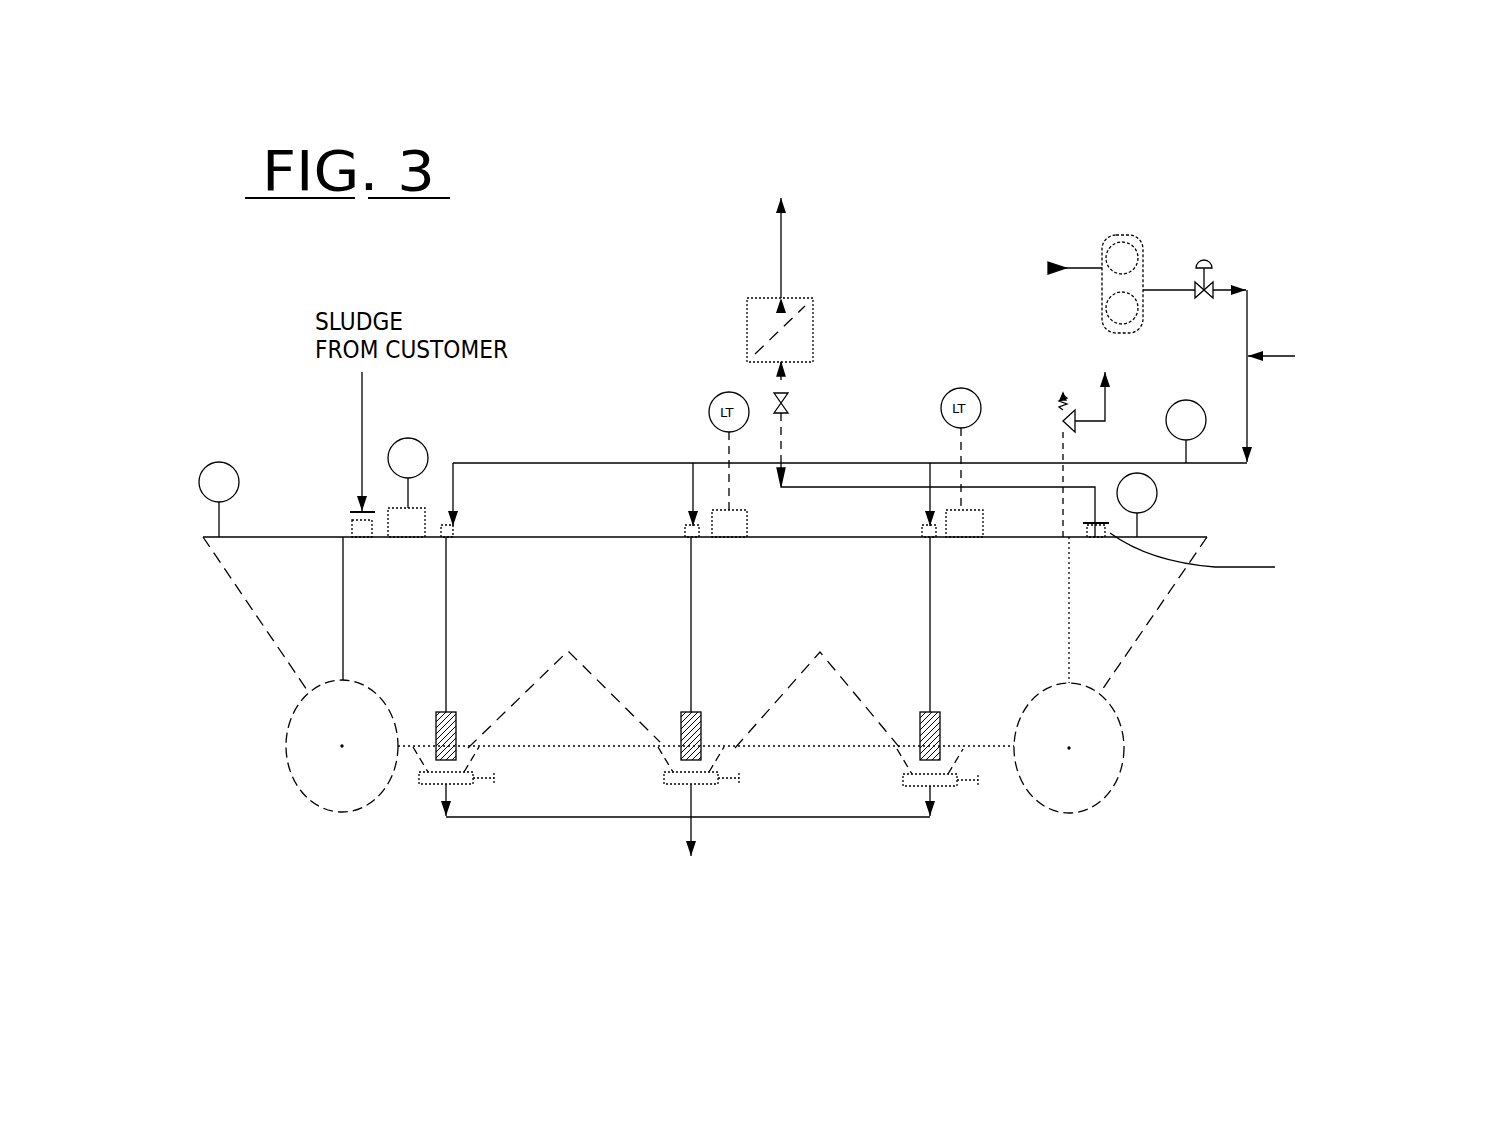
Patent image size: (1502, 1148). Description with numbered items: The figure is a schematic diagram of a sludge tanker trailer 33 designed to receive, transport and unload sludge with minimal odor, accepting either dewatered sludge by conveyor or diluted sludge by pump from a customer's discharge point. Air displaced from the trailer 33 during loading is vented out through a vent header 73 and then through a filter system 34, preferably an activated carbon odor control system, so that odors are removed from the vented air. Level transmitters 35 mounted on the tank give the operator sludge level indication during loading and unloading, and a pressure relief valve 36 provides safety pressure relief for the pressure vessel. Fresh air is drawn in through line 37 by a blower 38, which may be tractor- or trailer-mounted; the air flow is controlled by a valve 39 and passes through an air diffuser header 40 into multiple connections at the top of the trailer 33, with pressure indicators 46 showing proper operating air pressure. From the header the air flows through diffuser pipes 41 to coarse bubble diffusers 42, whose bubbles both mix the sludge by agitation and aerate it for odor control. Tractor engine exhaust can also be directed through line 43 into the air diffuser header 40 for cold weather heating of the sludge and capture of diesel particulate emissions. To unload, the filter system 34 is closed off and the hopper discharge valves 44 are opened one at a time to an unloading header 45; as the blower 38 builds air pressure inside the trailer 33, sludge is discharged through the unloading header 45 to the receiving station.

The sludge tanker trailer 33 is at (1125, 665).
The filter system 34 is at (745, 337).
The level transmitters 35 is at (414, 434).
The pressure relief valve 36 is at (1058, 418).
The line 37 is at (1083, 262).
The blower 38 is at (1134, 222).
The valve 39 is at (1217, 277).
The air diffuser header 40 is at (1252, 390).
The diffuser pipes 41 is at (458, 468).
The coarse bubble diffusers 42 is at (462, 728).
The line 43 is at (1278, 355).
The hopper discharge valves 44 is at (500, 780).
The unloading header 45 is at (583, 818).
The pressure indicators 46 is at (212, 463).
The vent header 73 is at (1215, 559).